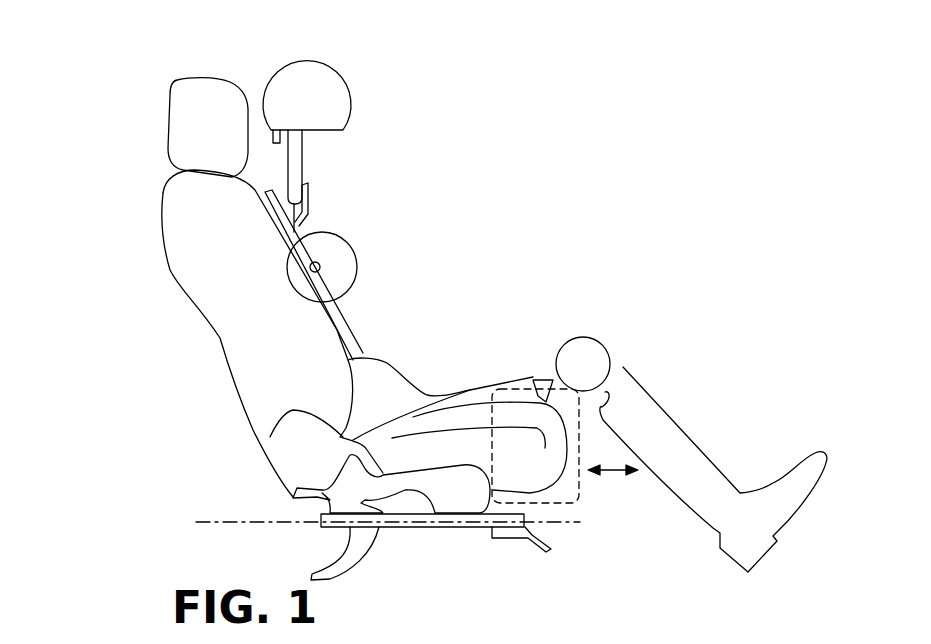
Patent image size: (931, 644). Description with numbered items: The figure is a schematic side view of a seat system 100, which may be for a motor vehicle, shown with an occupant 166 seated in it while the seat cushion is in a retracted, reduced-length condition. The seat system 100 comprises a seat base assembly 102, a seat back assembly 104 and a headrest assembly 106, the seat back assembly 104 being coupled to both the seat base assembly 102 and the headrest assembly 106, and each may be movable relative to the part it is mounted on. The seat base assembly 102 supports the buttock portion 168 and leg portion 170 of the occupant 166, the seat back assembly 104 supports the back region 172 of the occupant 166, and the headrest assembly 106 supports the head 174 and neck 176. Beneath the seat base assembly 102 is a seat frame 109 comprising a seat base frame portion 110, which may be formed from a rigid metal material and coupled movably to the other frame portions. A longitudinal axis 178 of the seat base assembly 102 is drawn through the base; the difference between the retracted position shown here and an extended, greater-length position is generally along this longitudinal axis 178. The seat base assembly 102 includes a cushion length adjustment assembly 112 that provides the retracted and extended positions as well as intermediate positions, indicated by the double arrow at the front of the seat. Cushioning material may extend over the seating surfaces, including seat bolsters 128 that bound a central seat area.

The seat system 100 is at (113, 197).
The seat base assembly 102 is at (445, 453).
The seat back assembly 104 is at (258, 333).
The headrest assembly 106 is at (182, 118).
The seat frame 109 is at (305, 532).
The seat base frame portion 110 is at (395, 527).
The cushion length adjustment assembly 112 is at (598, 398).
The seat bolsters 128 is at (460, 417).
The occupant 166 is at (343, 250).
The buttock portion 168 is at (383, 402).
The leg portion 170 is at (543, 403).
The back region 172 is at (345, 323).
The head 174 is at (328, 85).
The neck 176 is at (302, 155).
The longitudinal axis 178 is at (188, 524).